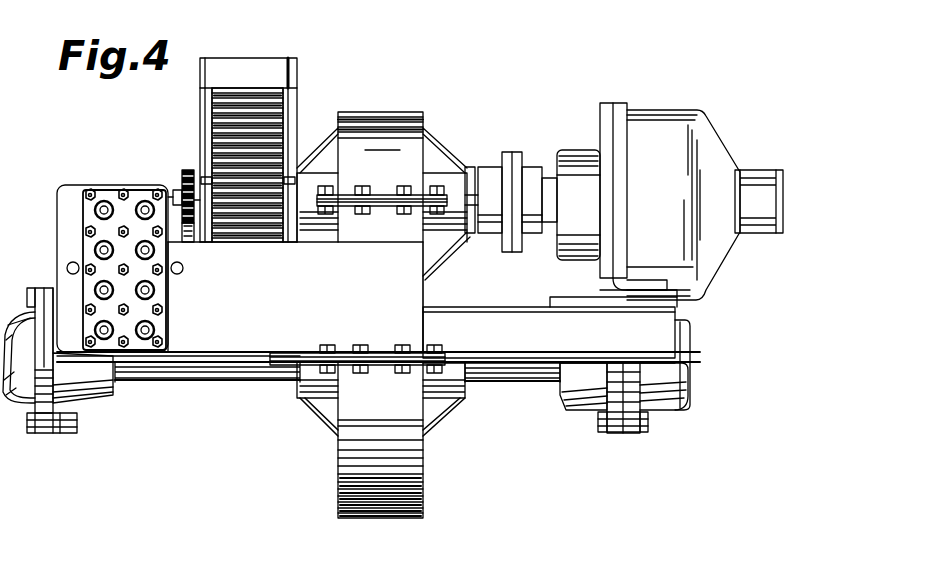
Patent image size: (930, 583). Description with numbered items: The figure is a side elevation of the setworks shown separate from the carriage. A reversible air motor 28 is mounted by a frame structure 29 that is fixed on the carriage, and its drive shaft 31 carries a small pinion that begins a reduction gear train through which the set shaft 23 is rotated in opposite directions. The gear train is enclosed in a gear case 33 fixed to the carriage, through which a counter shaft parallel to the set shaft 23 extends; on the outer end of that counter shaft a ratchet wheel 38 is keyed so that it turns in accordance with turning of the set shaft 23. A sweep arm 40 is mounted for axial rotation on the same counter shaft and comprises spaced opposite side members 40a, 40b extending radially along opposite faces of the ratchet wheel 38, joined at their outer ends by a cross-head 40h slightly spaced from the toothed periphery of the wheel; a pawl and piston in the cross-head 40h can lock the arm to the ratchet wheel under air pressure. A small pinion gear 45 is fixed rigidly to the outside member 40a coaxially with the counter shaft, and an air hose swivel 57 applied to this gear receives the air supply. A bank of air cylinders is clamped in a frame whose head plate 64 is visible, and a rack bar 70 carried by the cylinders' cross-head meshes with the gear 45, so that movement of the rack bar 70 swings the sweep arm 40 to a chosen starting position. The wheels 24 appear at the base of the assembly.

The set shaft 23 is at (218, 380).
The wheels 24 is at (98, 386).
The reversible air motor 28 is at (688, 152).
The frame structure 29 is at (483, 322).
The drive shaft 31 is at (471, 178).
The gear case 33 is at (348, 450).
The ratchet wheel 38 is at (212, 121).
The sweep arm 40 is at (250, 129).
The outside side member 40a is at (200, 100).
The side member 40b is at (297, 112).
The cross-head 40h is at (263, 72).
The pinion gear 45 is at (183, 172).
The air hose swivel 57 is at (176, 194).
The head plate 64 is at (158, 291).
The rack bar 70 is at (190, 244).